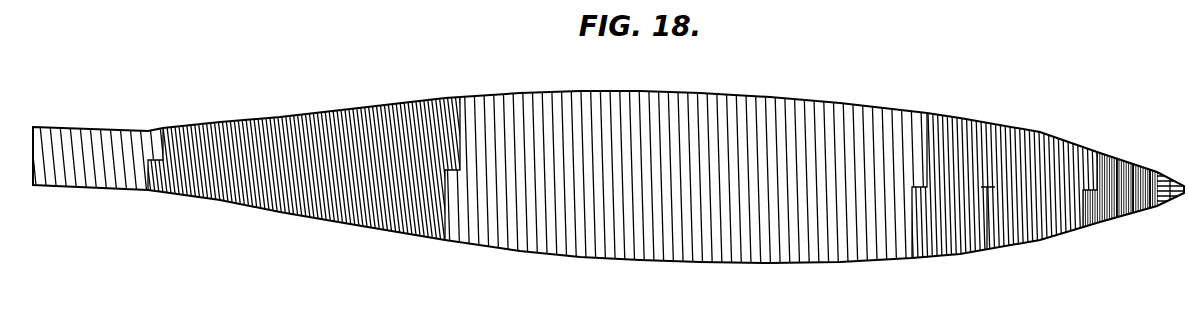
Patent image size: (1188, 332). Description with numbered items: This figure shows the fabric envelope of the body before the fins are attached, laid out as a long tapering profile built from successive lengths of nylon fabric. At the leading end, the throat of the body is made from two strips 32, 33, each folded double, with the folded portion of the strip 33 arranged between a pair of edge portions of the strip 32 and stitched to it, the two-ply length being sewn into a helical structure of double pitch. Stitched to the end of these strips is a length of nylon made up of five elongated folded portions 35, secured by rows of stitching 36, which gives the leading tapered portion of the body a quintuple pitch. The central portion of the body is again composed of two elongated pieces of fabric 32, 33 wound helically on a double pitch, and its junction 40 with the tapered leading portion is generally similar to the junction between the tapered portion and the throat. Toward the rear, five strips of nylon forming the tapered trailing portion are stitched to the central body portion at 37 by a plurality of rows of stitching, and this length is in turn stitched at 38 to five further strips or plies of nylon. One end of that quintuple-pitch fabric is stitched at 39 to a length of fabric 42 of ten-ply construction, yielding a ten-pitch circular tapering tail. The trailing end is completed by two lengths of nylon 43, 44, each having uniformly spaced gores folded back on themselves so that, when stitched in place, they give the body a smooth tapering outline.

The strip 32 is at (53, 180).
The strip 33 is at (60, 138).
The elongated folded portions 35 is at (283, 213).
The rows of stitching 36 is at (158, 158).
The stitching junction 37 is at (925, 186).
The stitching junction 38 is at (987, 245).
The stitching junction 39 is at (1090, 188).
The junction 40 is at (452, 168).
The length of fabric 42 is at (1125, 219).
The length of nylon fabric 43 is at (1162, 189).
The length of nylon fabric 44 is at (1180, 201).